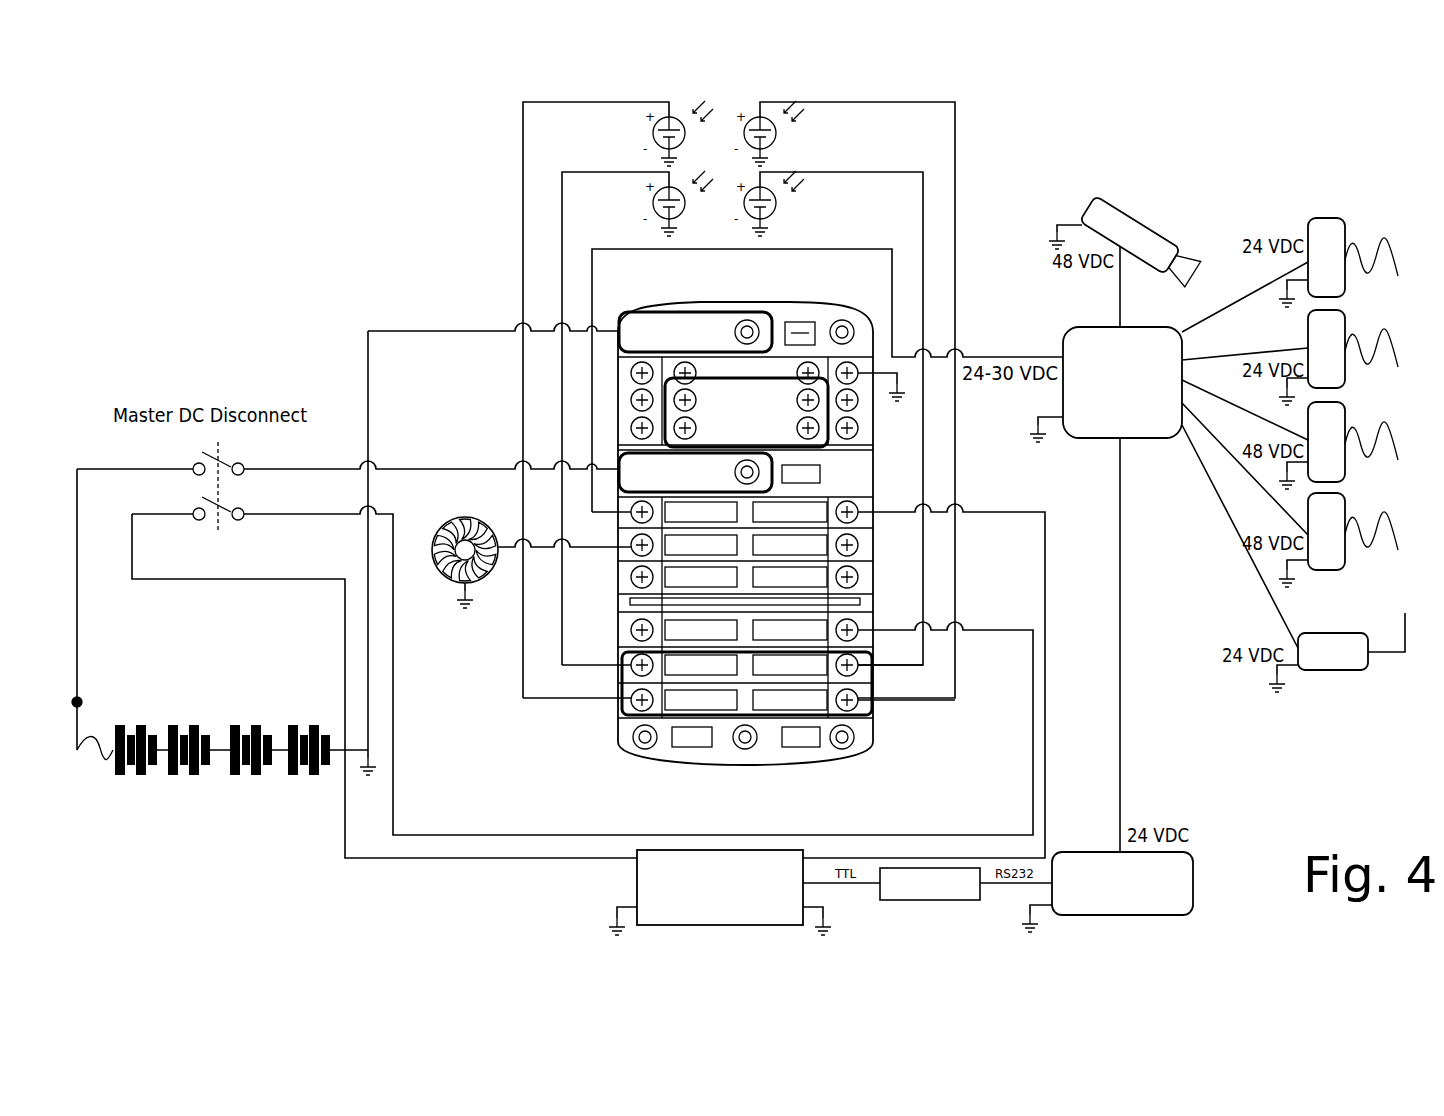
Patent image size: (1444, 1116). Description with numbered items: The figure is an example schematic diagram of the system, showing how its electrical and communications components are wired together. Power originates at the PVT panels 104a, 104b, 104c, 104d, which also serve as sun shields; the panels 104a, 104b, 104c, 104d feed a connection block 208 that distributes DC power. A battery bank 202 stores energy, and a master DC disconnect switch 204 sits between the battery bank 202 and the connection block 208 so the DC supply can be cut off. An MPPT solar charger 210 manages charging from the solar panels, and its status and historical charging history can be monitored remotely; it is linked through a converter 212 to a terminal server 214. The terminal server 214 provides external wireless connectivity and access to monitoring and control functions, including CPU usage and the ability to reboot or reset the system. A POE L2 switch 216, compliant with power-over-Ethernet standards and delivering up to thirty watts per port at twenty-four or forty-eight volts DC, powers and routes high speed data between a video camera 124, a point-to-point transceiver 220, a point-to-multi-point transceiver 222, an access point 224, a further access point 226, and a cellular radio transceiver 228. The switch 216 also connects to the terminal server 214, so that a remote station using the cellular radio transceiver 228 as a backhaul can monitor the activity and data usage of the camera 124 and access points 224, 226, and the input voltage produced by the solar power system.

The PVT panel 104a is at (672, 115).
The PVT panel 104b is at (652, 208).
The PVT panel 104c is at (778, 128).
The top solar panel 104d is at (778, 212).
The video camera 124 is at (1122, 206).
The battery bank 202 is at (270, 724).
The master DC disconnect switch 204 is at (185, 478).
The connection block 208 is at (676, 303).
The MPPT solar charger 210 is at (637, 888).
The converter 212 is at (930, 900).
The terminal server 214 is at (1090, 852).
The POE L2 switch 216 is at (1082, 327).
The point-to-point transceiver 220 is at (1310, 218).
The point-to-multi-point transceiver 222 is at (1341, 322).
The access point 224 is at (1341, 414).
The further access point 226 is at (1341, 504).
The cellular radio transceiver 228 is at (1308, 633).